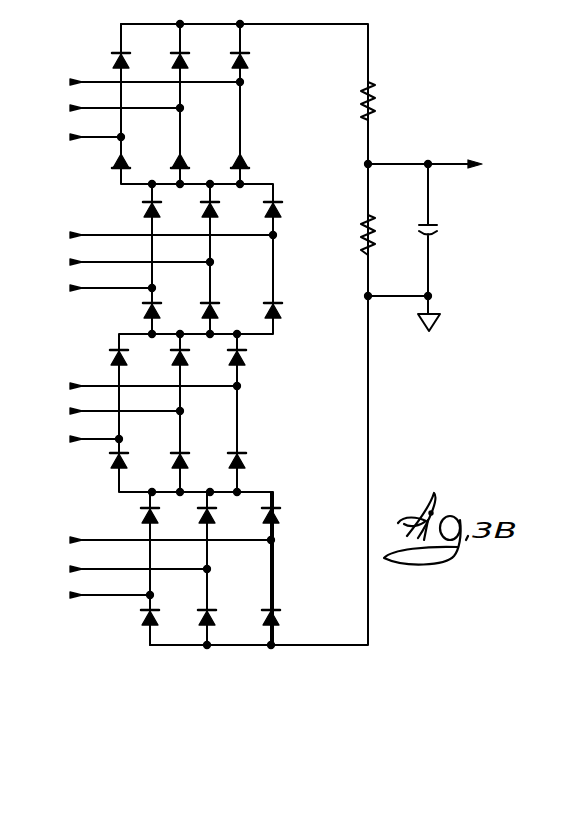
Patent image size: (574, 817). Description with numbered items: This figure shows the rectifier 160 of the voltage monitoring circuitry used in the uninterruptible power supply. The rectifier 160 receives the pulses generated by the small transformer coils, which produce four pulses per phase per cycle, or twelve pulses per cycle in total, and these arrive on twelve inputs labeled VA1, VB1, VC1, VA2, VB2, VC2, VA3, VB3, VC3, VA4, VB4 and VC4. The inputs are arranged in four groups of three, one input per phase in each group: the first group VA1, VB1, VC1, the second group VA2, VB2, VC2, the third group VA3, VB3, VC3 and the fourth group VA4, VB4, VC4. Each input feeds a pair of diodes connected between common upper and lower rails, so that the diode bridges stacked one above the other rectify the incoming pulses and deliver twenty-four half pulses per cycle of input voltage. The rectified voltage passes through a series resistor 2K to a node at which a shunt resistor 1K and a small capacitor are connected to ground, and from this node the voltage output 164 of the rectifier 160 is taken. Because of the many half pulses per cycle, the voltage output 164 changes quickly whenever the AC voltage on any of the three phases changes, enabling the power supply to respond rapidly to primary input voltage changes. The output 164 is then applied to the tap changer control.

The rectifier 160 is at (403, 199).
The voltage output 164 is at (455, 161).
The 2K resistor 2K is at (351, 101).
The 1K resistor 1K is at (353, 235).
The input VA1 is at (138, 81).
The input VB1 is at (108, 108).
The input VC1 is at (78, 137).
The input VA2 is at (156, 235).
The input VB2 is at (124, 262).
The input VC2 is at (95, 288).
The input VA3 is at (133, 386).
The input VB3 is at (105, 411).
The input VC3 is at (74, 439).
The input VA4 is at (150, 540).
The input VB4 is at (118, 569).
The input VC4 is at (90, 595).